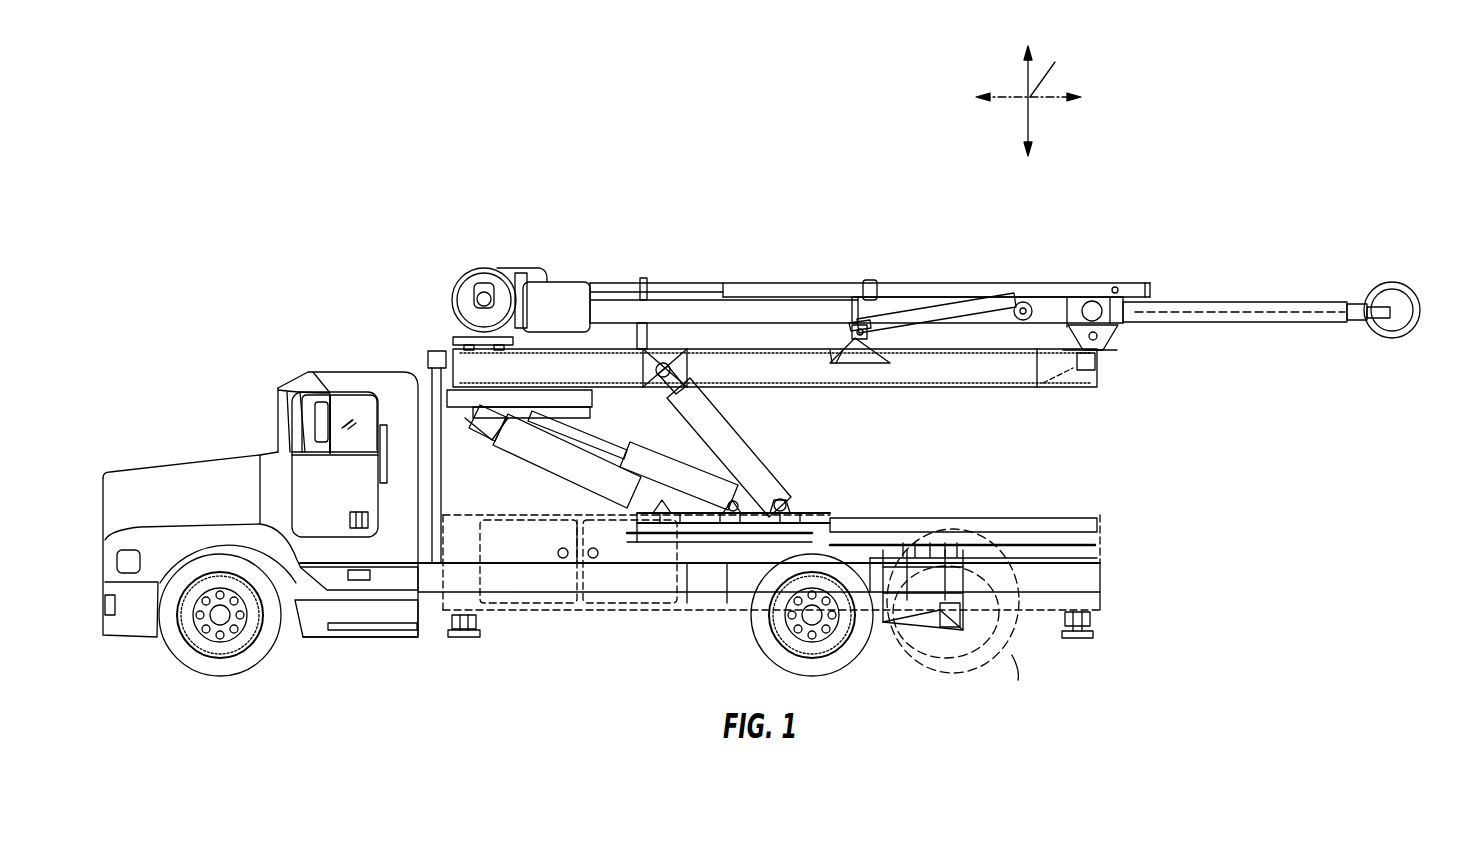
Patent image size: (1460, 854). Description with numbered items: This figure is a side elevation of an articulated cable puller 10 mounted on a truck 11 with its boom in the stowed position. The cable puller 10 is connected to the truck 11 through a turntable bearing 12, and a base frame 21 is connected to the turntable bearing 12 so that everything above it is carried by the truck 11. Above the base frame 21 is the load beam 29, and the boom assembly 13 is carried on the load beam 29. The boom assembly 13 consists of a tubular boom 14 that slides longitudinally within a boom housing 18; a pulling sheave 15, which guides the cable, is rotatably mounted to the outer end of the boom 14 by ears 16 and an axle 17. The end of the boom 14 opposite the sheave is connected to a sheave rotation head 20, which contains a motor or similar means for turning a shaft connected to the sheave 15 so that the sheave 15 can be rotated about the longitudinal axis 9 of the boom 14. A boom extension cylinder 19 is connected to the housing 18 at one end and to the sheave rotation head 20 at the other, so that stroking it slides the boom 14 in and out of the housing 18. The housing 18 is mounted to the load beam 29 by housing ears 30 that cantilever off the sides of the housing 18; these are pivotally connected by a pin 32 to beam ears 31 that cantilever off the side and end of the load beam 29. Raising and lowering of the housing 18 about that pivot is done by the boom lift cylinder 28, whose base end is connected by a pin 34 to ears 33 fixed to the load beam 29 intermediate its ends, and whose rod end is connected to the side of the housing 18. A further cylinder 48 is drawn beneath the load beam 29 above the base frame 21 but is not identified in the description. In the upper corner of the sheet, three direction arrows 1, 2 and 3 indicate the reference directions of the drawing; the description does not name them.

The horizontal axis 1 is at (1038, 98).
The vertical axis 2 is at (1028, 85).
The rotational axis 3 is at (1055, 62).
The longitudinal axis 9 is at (1170, 314).
The articulated cable puller 10 is at (950, 351).
The truck 11 is at (187, 476).
The turntable bearing 12 is at (620, 522).
The boom assembly 13 is at (1074, 300).
The tubular boom 14 is at (1198, 306).
The pulling sheave 15 is at (1385, 286).
The ears 16 is at (1378, 320).
The axle 17 is at (1400, 331).
The boom housing 18 is at (890, 296).
The boom extension cylinder 19 is at (1012, 292).
The sheave rotation head 20 is at (563, 288).
The base frame 21 is at (785, 498).
The boom lift cylinder 28 is at (900, 338).
The load beam 29 is at (965, 370).
The housing ears 30 is at (1108, 330).
The beam ears 31 is at (1100, 346).
The pin 32 is at (1104, 340).
The ears 33 is at (842, 358).
The pin 34 is at (846, 341).
The cylinder 48 is at (548, 455).